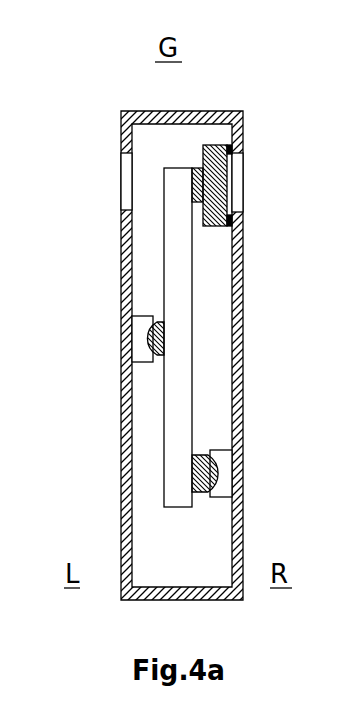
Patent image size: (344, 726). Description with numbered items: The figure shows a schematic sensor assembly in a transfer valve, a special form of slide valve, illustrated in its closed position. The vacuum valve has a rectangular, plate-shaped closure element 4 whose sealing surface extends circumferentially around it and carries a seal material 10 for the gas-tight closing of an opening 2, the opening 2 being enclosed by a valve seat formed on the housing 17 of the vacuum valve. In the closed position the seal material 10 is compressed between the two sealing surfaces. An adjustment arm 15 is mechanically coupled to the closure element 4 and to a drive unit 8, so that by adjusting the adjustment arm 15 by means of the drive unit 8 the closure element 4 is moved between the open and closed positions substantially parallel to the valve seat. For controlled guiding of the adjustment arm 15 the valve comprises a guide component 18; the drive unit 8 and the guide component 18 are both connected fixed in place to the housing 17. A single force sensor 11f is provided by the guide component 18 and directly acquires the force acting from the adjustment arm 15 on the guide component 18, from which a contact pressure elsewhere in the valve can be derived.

The opening 2 is at (176, 165).
The closure element 4 is at (260, 185).
The drive unit 8 is at (250, 466).
The seal material 10 is at (278, 207).
The force sensor 11f is at (91, 280).
The adjustment arm 15 is at (247, 337).
The housing 17 is at (130, 355).
The guide component 18 is at (85, 325).